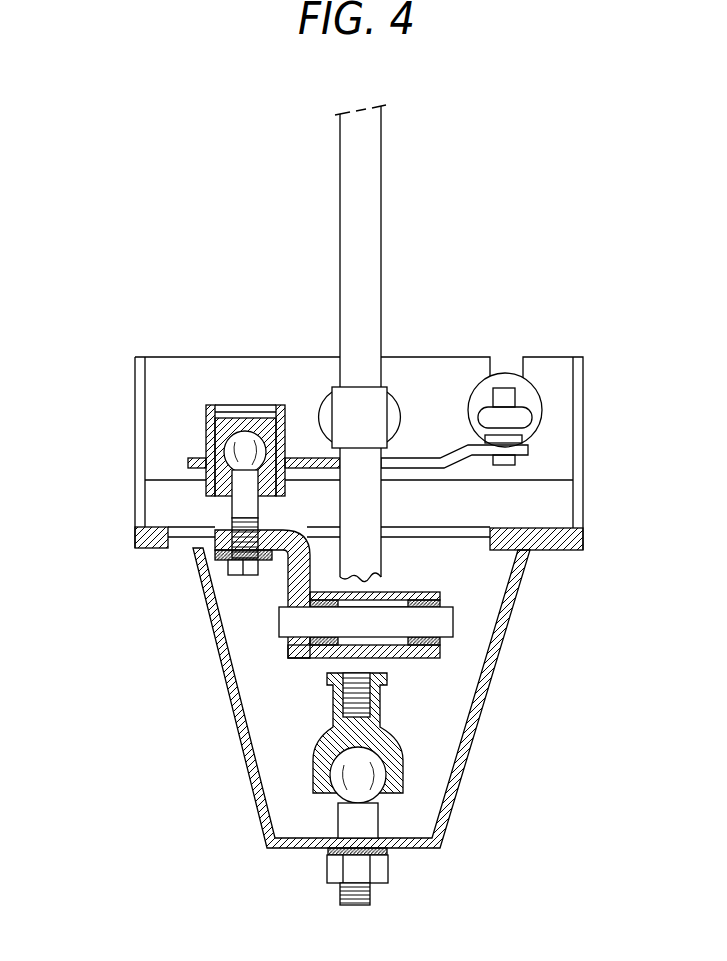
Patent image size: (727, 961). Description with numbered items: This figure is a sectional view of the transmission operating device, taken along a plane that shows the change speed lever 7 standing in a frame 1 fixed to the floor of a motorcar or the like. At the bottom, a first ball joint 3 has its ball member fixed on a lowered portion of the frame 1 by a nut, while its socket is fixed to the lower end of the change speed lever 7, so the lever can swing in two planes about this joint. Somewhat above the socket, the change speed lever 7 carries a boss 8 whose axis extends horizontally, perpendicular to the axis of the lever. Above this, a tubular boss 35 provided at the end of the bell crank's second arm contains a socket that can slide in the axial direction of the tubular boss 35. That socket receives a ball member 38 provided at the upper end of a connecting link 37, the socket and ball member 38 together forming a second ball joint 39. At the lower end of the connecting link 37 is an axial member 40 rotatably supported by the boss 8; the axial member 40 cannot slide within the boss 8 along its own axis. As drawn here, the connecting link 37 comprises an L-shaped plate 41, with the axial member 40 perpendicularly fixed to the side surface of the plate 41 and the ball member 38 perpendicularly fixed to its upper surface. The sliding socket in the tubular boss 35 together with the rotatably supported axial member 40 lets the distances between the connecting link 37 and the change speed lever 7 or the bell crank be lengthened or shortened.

The frame 1 is at (247, 770).
The first ball joint 3 is at (425, 781).
The change speed lever 7 is at (373, 247).
The boss 8 is at (383, 592).
The tubular boss 35 is at (213, 425).
The connecting link 37 is at (251, 594).
The ball member 38 is at (243, 500).
The second ball joint 39 is at (186, 445).
The axial member 40 is at (440, 627).
The L-shaped plate 41 is at (288, 596).